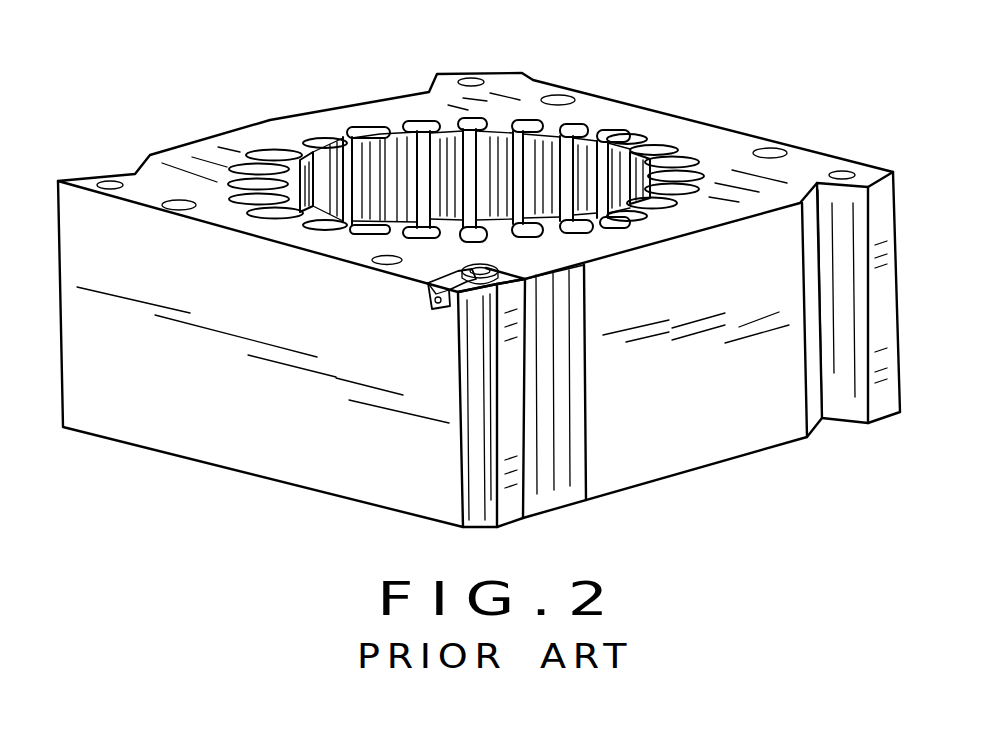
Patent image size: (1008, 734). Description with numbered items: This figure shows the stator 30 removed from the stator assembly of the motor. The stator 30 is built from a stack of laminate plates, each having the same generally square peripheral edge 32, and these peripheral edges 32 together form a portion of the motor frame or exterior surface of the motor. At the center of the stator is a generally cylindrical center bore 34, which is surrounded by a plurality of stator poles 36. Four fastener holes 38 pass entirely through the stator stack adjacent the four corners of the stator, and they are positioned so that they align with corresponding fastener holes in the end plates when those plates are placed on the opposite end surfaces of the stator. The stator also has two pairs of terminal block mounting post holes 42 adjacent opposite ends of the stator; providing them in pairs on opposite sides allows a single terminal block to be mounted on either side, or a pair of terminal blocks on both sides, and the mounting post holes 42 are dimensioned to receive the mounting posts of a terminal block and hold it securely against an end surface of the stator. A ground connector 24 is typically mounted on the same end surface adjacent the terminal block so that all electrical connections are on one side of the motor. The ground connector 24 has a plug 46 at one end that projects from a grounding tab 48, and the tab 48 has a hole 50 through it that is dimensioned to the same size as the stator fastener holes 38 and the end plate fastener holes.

The ground connector 24 is at (429, 283).
The stator 30 is at (689, 133).
The peripheral edge 32 is at (228, 133).
The center bore 34 is at (498, 124).
The stator poles 36 is at (398, 133).
The fastener holes 38 is at (110, 176).
The terminal block mounting post holes 42 is at (178, 196).
The plug 46 is at (442, 301).
The grounding tab 48 is at (585, 264).
The hole 50 is at (510, 256).